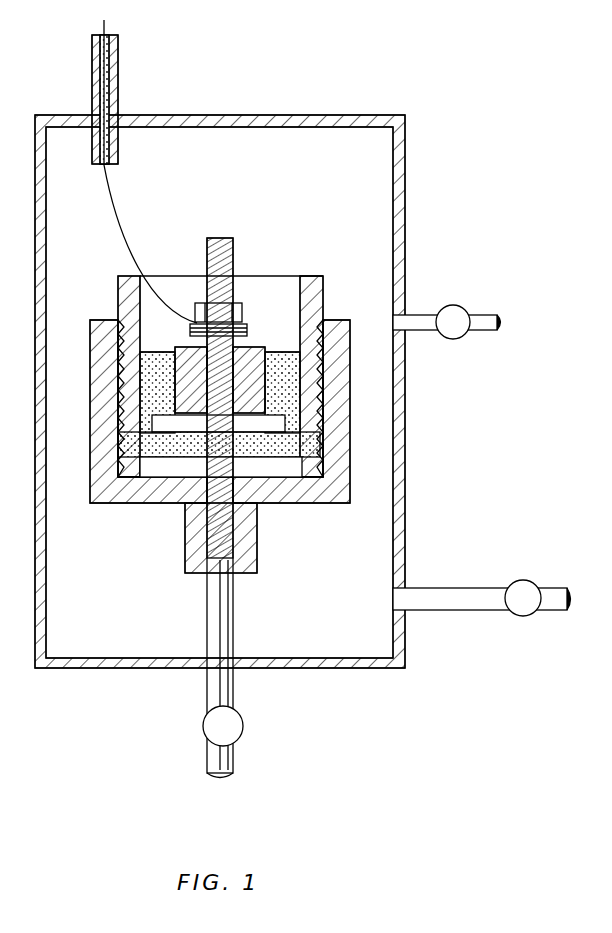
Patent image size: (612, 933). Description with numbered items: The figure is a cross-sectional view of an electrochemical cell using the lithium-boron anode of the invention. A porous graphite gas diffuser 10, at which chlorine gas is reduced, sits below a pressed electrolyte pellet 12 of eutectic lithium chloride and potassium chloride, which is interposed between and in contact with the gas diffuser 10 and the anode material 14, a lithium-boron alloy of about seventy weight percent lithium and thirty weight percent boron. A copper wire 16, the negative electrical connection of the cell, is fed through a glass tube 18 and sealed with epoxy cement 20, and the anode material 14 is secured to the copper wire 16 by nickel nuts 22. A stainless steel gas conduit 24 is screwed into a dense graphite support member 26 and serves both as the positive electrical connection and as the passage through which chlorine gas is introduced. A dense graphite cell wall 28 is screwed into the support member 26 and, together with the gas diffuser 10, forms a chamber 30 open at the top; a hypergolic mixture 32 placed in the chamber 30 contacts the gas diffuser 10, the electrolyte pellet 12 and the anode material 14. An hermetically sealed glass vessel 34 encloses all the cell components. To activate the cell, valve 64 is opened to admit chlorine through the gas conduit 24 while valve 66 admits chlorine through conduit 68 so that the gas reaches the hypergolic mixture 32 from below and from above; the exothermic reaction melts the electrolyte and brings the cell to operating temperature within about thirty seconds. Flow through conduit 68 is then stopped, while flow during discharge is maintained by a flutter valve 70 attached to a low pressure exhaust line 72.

The gas diffuser 10 is at (320, 450).
The electrolyte pellet 12 is at (155, 428).
The anode material 14 is at (172, 356).
The copper wire 16 is at (124, 228).
The glass tube 18 is at (92, 72).
The epoxy cement 20 is at (110, 94).
The nuts 22 is at (243, 314).
The gas conduit 24 is at (209, 626).
The support member 26 is at (92, 330).
The cell wall 28 is at (324, 292).
The chamber 30 is at (270, 276).
The hypergolic mixture 32 is at (248, 330).
The glass vessel 34 is at (405, 556).
The valve 64 is at (243, 731).
The valve 66 is at (534, 580).
The conduit 68 is at (464, 611).
The flutter valve 70 is at (458, 306).
The exhaust line 72 is at (486, 318).